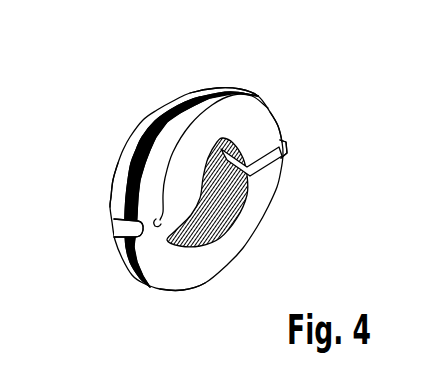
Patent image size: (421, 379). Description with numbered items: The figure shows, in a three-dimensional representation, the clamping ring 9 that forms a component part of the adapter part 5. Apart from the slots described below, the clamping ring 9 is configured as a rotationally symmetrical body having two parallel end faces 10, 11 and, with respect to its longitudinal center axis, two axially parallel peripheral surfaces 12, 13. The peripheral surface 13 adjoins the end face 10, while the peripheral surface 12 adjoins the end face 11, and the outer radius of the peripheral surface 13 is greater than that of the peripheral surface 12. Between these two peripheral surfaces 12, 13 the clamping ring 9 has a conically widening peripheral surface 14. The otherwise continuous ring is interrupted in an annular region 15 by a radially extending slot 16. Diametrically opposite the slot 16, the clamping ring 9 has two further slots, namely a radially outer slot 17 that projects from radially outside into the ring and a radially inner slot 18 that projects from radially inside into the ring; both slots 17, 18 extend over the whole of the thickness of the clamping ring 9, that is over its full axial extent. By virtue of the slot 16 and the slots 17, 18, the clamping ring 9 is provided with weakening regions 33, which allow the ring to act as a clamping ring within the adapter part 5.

The adapter part 5 is at (205, 76).
The clamping ring 9 is at (228, 262).
The end face 10 is at (262, 198).
The end face 11 is at (106, 168).
The peripheral surface 12 is at (143, 135).
The peripheral surface 13 is at (220, 91).
The conically widening peripheral surface 14 is at (168, 112).
The annular region 15 is at (291, 131).
The slot 16 is at (272, 154).
The radially outer slot 17 is at (106, 213).
The radially inner slot 18 is at (167, 213).
The weakening regions 33 is at (286, 145).